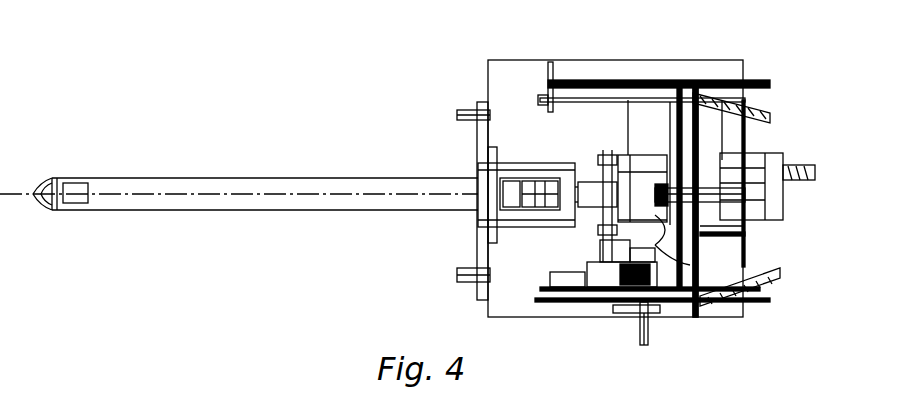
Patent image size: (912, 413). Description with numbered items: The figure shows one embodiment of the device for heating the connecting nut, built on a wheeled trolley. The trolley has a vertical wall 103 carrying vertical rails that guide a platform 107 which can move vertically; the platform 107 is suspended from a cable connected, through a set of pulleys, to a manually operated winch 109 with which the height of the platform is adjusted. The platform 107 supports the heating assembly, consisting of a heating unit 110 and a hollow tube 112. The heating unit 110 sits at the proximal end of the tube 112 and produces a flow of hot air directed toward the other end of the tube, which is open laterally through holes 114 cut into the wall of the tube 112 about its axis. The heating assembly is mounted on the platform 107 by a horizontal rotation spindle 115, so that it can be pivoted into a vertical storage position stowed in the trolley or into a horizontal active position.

The vertical wall 103 is at (672, 118).
The platform 107 is at (700, 262).
The manually operated winch 109 is at (775, 168).
The heating unit 110 is at (533, 175).
The hollow tube 112 is at (221, 186).
The holes 114 is at (72, 183).
The horizontal rotation spindle 115 is at (603, 250).